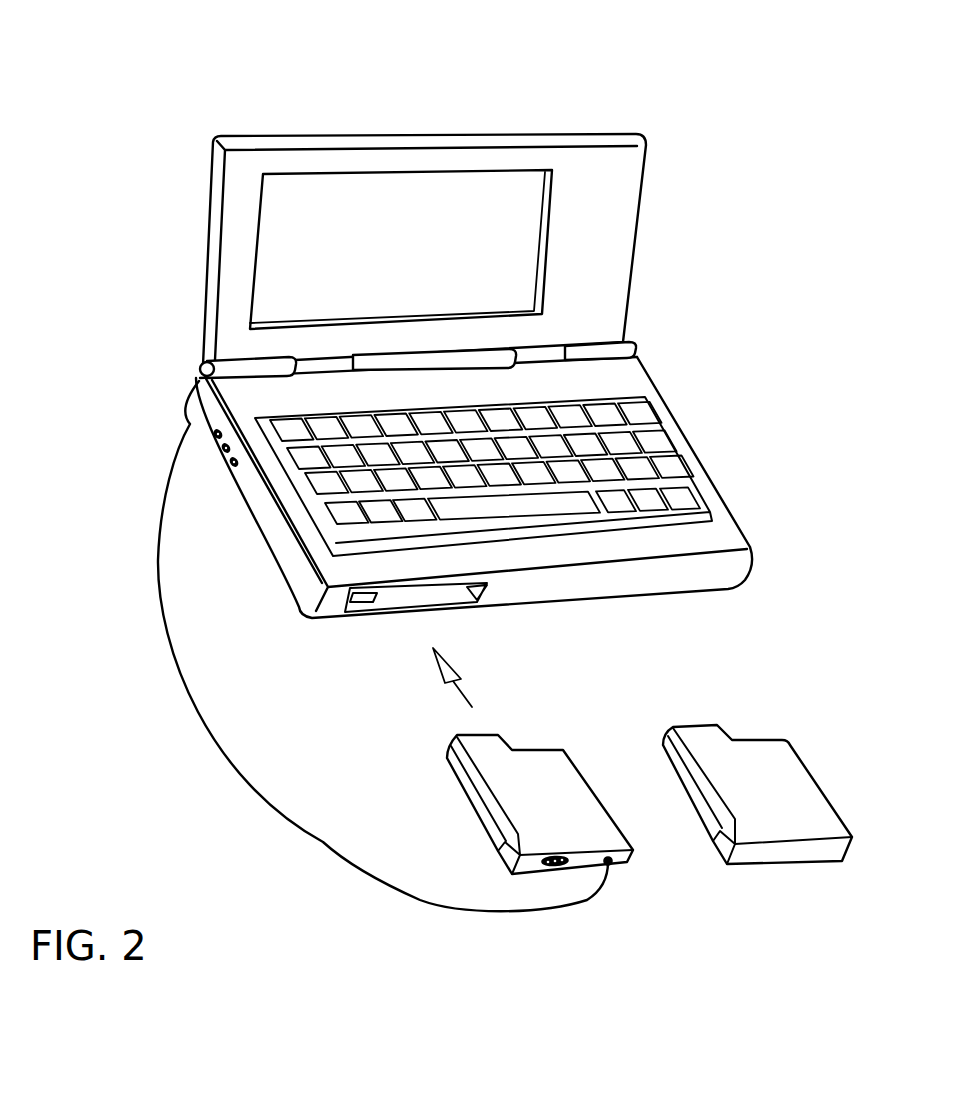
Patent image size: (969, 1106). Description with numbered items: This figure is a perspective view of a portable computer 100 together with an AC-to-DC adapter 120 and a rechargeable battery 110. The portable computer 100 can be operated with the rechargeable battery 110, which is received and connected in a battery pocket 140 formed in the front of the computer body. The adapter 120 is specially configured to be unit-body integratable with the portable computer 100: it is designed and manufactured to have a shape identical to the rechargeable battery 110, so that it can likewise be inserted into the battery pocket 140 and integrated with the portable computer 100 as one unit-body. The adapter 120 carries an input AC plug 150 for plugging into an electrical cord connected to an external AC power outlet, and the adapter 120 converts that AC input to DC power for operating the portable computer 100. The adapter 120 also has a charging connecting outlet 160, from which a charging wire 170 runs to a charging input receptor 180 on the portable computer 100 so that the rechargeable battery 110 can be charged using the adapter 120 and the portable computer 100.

The portable computer 100 is at (153, 92).
The rechargeable battery 110 is at (787, 748).
The AC-to-DC adapter 120 is at (482, 770).
The battery pocket 140 is at (434, 602).
The input AC plug 150 is at (562, 868).
The charging connecting outlet 160 is at (613, 859).
The charging wire 170 is at (373, 883).
The charging input receptor 180 is at (208, 421).